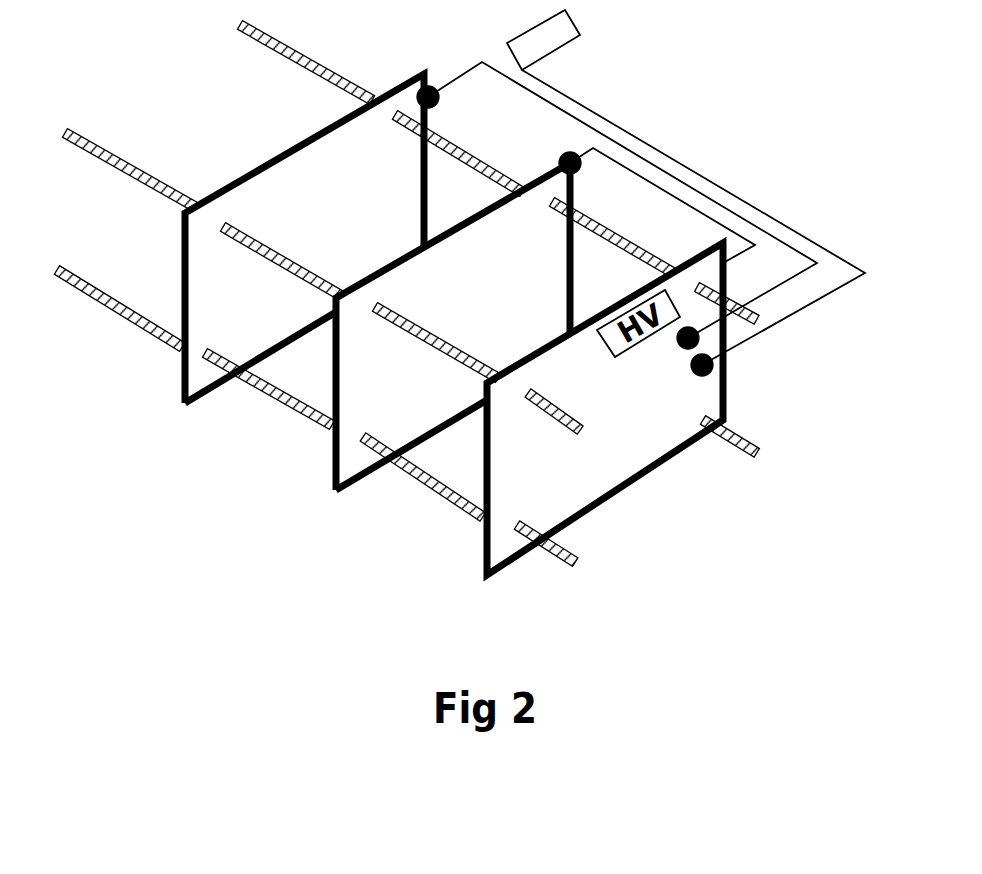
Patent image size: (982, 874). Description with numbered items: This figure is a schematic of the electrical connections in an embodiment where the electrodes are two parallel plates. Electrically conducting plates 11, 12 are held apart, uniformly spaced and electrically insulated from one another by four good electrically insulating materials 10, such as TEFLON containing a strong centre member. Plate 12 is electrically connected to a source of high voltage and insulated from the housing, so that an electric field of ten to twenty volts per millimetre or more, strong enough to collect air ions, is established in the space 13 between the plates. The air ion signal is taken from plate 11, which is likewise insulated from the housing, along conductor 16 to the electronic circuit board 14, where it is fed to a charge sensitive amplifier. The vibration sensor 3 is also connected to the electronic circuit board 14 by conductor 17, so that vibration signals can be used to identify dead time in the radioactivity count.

The electrically insulating materials 10 is at (268, 70).
The electrically conducting plate 11 is at (184, 410).
The electrically conducting plate 12 is at (340, 497).
The space between the plates 13 is at (315, 347).
The electronic circuit board 14 is at (486, 579).
The conductor 16 is at (785, 241).
The conductor 17 is at (652, 147).
The vibration sensor 3 is at (543, 40).